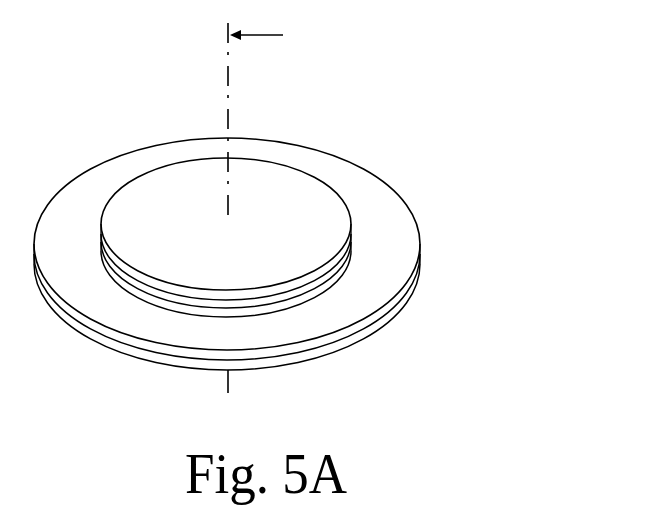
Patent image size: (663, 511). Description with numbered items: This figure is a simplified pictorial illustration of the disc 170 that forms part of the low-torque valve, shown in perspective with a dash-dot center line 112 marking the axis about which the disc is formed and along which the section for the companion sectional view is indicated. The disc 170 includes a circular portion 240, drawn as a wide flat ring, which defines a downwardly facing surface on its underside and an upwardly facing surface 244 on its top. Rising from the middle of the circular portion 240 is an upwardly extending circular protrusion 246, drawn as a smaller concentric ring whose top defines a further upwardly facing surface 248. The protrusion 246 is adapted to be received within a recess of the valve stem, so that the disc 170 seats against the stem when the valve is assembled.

The central axis 112 is at (228, 77).
The disc 170 is at (503, 171).
The circular portion 240 is at (418, 292).
The upwardly facing surface 244 is at (406, 258).
The upwardly extending circular protrusion 246 is at (362, 235).
The upwardly facing surface 248 is at (289, 188).